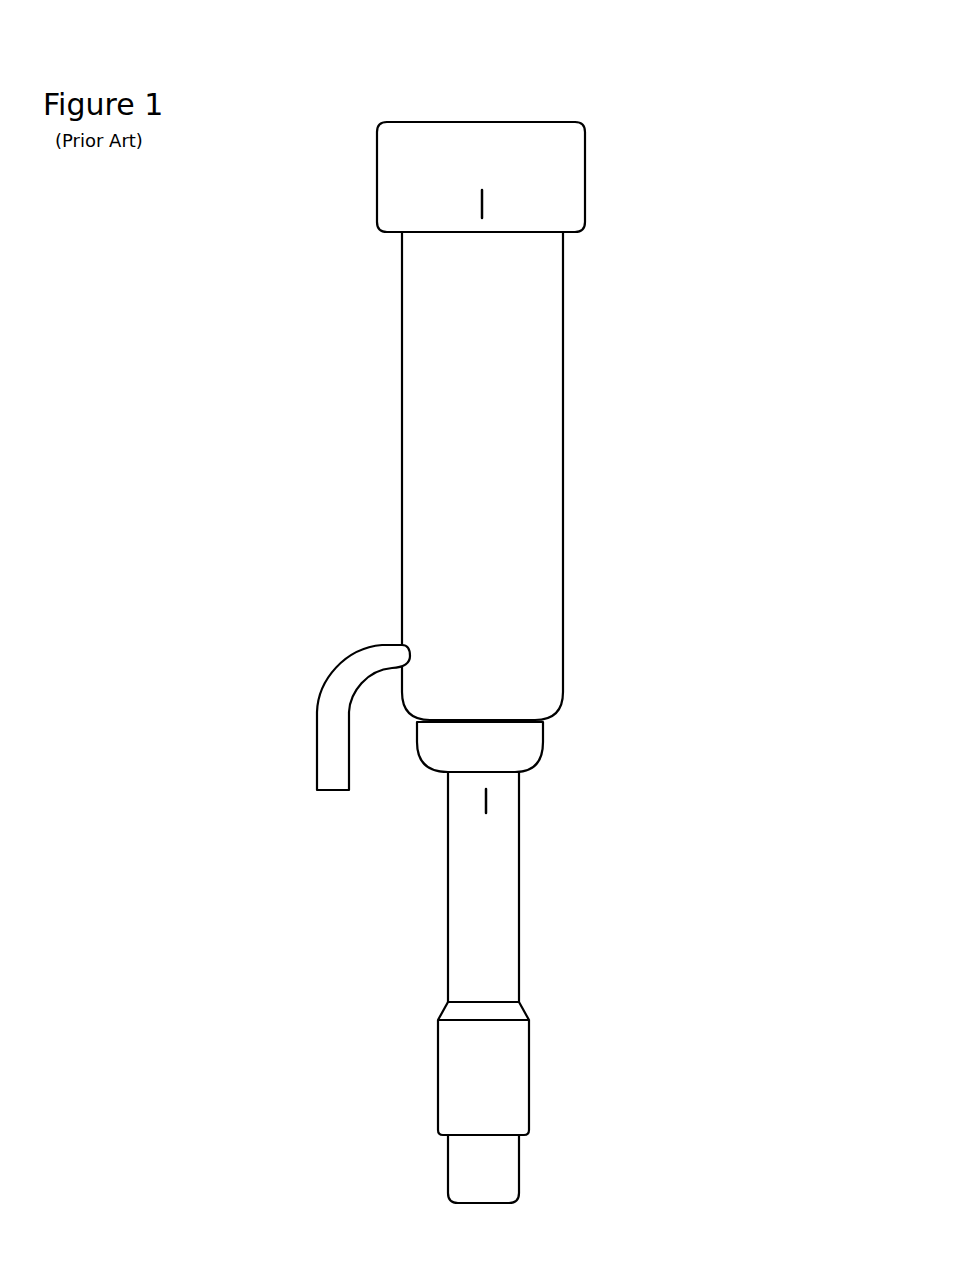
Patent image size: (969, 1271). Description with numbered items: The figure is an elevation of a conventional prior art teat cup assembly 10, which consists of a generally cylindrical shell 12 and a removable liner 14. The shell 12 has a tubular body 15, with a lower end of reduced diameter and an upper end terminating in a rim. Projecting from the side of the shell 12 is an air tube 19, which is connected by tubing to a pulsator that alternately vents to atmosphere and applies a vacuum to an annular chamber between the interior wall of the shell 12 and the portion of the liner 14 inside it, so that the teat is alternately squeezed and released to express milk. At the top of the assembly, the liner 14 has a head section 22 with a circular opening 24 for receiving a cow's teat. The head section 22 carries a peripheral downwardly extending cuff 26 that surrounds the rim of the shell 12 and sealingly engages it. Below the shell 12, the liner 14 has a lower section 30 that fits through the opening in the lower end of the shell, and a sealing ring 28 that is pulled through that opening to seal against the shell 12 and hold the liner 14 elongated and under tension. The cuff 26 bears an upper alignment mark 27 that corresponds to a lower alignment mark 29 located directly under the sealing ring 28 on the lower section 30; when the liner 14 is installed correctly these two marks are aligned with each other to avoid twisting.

The teat cup assembly 10 is at (700, 278).
The shell 12 is at (585, 515).
The liner 14 is at (545, 875).
The tubular body 15 is at (448, 452).
The air tube 19 is at (329, 742).
The head section 22 is at (573, 148).
The circular opening 24 is at (490, 122).
The cuff 26 is at (402, 182).
The upper alignment mark 27 is at (486, 205).
The sealing ring 28 is at (538, 726).
The lower alignment mark 29 is at (486, 801).
The lower section 30 is at (471, 960).